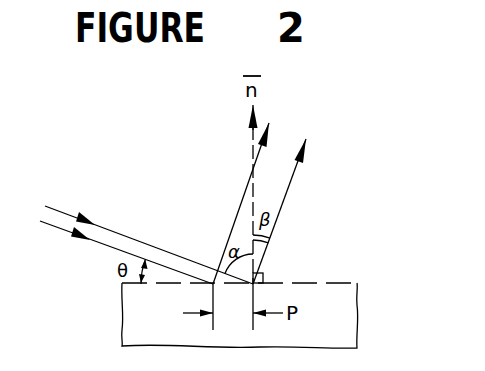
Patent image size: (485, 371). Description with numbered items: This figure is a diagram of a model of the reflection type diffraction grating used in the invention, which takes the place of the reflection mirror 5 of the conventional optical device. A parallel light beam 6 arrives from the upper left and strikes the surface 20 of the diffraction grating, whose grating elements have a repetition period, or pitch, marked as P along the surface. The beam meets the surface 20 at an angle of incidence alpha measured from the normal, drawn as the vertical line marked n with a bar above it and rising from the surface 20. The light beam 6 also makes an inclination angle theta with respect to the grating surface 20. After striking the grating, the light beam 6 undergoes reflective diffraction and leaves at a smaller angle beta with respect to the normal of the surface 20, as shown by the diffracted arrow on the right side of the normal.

The reflection mirror 5 is at (343, 309).
The surface of the diffraction grating 20 is at (309, 283).
The parallel light beam 6 is at (126, 235).